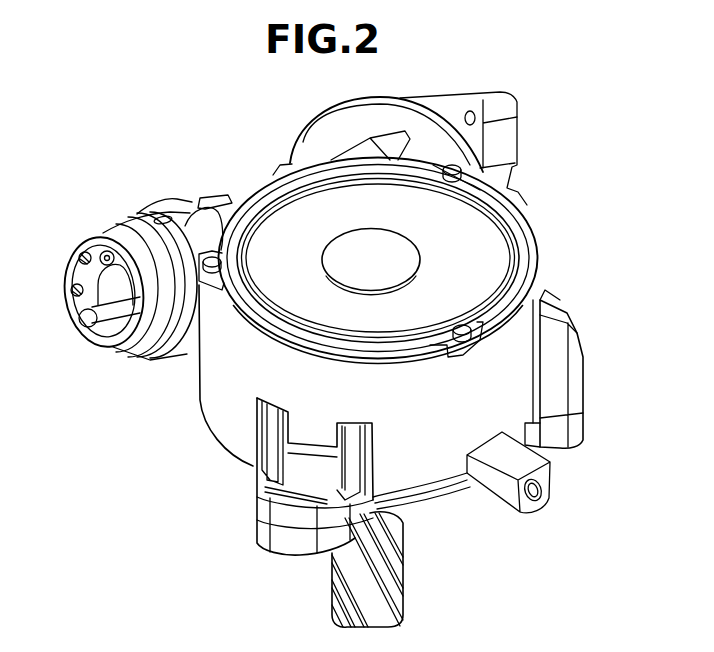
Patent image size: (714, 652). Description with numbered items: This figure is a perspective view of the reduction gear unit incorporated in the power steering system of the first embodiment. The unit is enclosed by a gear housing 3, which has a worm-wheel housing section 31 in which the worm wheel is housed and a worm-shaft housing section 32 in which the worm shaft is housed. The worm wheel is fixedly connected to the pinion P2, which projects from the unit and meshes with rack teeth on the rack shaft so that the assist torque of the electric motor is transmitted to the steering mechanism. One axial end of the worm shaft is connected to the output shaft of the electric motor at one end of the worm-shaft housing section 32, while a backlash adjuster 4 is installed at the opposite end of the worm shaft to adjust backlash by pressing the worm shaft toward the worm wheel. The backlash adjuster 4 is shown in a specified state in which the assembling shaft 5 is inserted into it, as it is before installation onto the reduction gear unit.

The gear housing 3 is at (545, 203).
The worm-wheel housing section 31 is at (545, 300).
The worm-shaft housing section 32 is at (211, 190).
The backlash adjuster 4 is at (76, 242).
The assembling shaft 5 is at (107, 335).
The pinion P2 is at (393, 573).